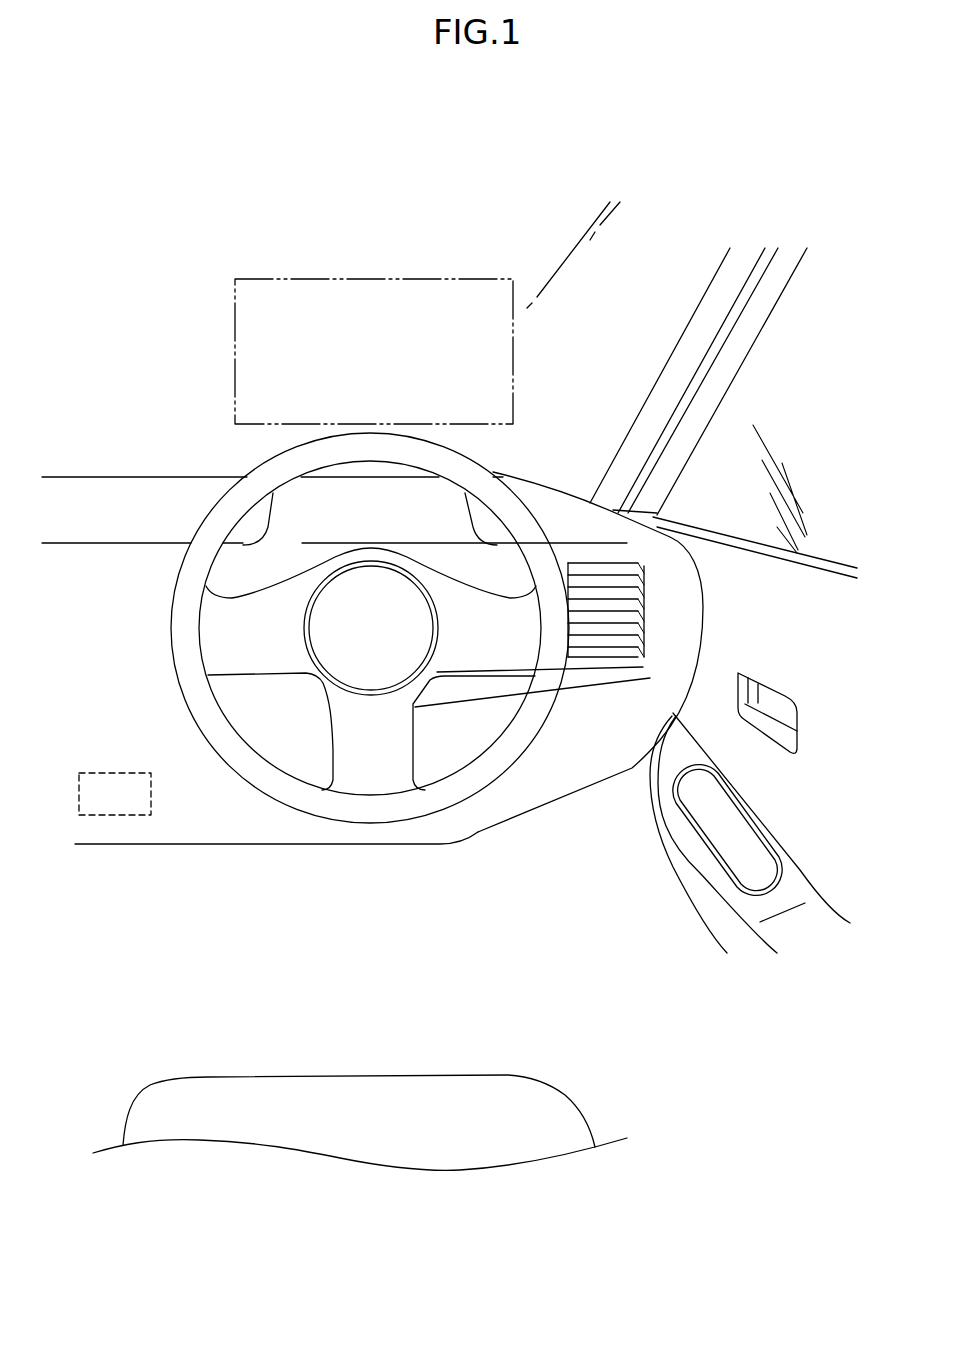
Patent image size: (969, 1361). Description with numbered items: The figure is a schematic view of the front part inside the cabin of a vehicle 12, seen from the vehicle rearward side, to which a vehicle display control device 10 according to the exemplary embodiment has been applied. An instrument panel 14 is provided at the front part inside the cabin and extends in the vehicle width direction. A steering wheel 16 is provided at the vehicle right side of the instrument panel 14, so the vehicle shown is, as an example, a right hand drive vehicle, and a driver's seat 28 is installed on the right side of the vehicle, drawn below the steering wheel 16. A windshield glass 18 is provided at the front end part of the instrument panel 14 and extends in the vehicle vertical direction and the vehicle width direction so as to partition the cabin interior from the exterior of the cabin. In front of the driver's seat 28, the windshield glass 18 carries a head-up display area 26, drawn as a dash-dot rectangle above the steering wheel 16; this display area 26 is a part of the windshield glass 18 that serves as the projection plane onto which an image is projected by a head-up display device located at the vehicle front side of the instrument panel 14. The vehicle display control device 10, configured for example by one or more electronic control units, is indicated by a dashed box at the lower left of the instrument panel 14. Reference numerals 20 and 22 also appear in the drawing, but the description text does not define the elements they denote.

The vehicle display control device 10 is at (118, 816).
The vehicle 12 is at (297, 190).
The instrument panel 14 is at (553, 804).
The steering wheel 16 is at (549, 518).
The windshield glass 18 is at (627, 362).
The windshield 20 is at (700, 307).
The door 22 is at (835, 523).
The head-up display area 26 is at (337, 277).
The driver's seat 28 is at (515, 1075).